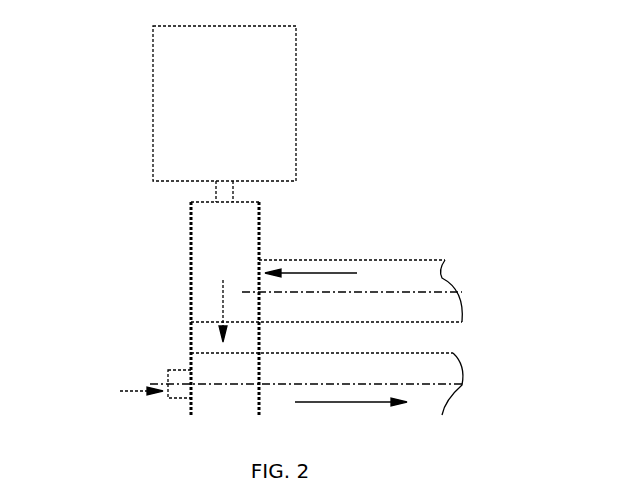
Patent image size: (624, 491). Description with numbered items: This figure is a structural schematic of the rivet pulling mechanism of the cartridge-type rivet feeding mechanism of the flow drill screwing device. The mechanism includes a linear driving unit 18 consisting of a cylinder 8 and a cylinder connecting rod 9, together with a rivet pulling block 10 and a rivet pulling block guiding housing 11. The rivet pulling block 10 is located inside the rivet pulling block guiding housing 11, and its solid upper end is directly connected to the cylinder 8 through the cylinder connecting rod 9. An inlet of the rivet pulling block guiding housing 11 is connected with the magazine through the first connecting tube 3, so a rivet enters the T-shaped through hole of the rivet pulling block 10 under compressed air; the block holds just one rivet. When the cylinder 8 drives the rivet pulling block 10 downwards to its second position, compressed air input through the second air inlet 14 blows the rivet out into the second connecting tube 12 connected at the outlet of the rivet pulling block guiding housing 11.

The first connecting tube 3 is at (433, 280).
The cylinder 8 is at (265, 167).
The cylinder connecting rod 9 is at (233, 188).
The rivet pulling block 10 is at (208, 278).
The rivet pulling block guiding housing 11 is at (192, 327).
The second connecting tube 12 is at (430, 370).
The second air inlet 14 is at (168, 382).
The linear driving unit 18 is at (307, 128).